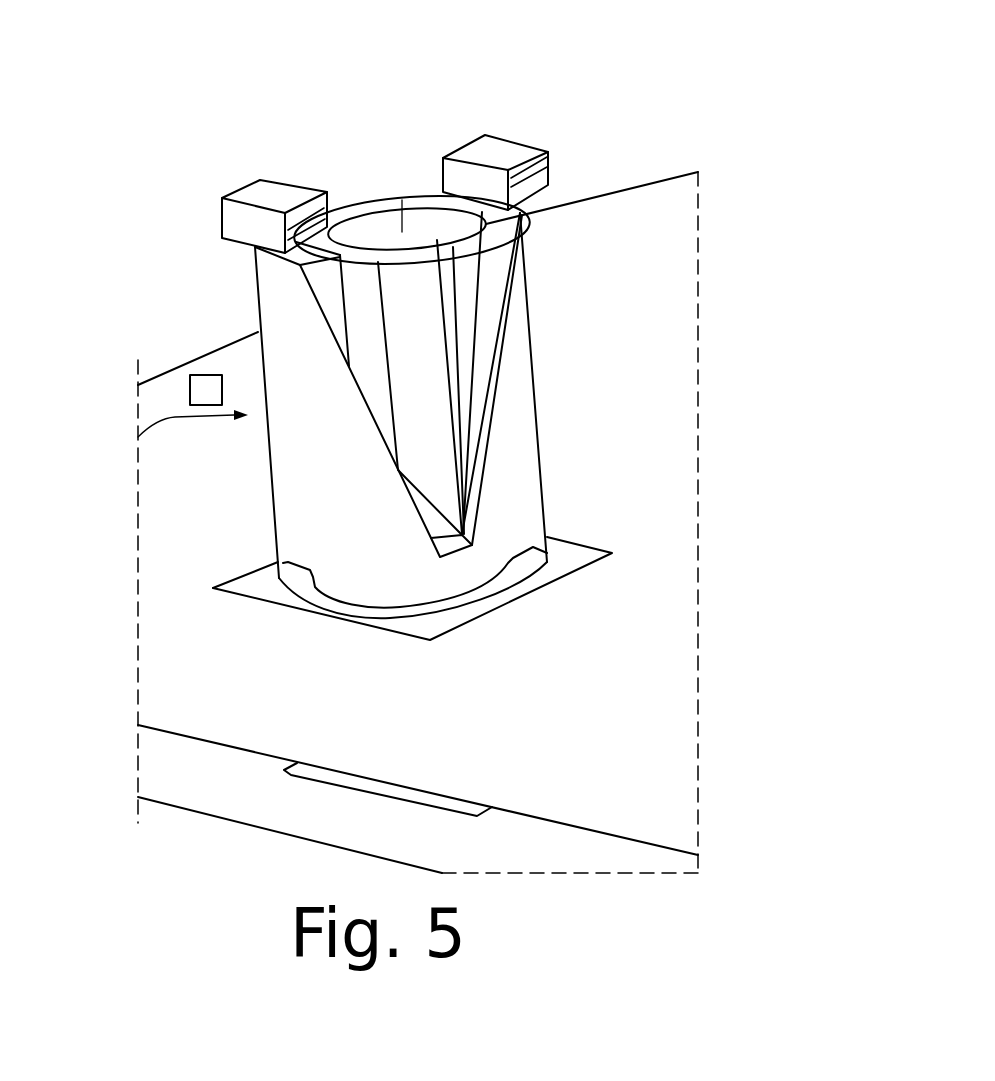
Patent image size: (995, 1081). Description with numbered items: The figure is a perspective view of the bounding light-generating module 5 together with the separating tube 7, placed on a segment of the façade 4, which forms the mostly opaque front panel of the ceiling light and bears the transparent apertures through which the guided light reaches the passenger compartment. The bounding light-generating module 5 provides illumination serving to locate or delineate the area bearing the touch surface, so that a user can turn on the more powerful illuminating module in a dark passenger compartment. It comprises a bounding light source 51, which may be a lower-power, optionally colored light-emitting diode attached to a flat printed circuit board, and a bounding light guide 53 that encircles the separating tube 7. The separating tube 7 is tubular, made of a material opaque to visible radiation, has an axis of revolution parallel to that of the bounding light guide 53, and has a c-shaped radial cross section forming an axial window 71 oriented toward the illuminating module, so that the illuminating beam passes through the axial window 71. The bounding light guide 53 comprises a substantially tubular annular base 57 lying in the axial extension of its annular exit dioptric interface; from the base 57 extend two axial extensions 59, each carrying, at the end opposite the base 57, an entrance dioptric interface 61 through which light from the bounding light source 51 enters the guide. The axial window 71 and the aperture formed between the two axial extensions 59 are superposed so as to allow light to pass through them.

The façade 4 is at (172, 697).
The bounding light-generating module 5 is at (636, 140).
The separating tube 7 is at (365, 197).
The axial window 71 is at (402, 232).
The bounding light source 51 is at (220, 212).
The entrance dioptric interface 61 is at (257, 245).
The axial extension 59 is at (267, 290).
The base 57 is at (277, 555).
The bounding light guide 53 is at (138, 437).